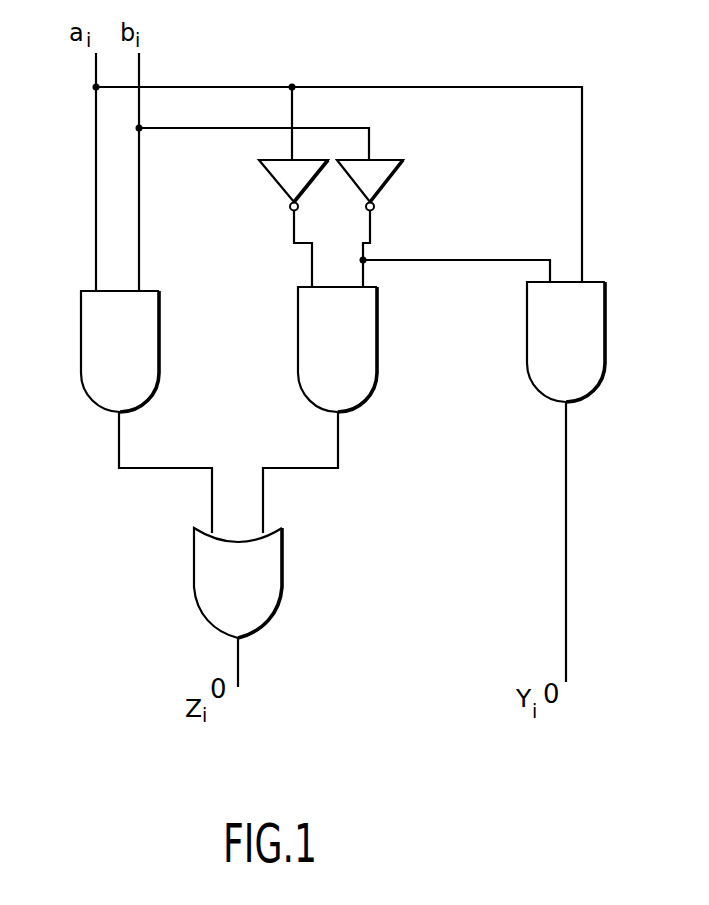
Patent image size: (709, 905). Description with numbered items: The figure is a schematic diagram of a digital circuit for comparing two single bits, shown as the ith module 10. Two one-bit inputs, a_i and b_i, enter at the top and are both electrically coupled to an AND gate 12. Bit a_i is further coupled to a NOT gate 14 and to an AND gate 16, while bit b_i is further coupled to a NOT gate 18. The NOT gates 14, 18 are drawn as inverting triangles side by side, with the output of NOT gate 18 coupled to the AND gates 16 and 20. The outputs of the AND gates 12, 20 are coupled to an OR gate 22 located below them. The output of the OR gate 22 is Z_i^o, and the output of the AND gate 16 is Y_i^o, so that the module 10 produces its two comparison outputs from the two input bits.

The ith module 10 is at (92, 536).
The AND gate 12 is at (160, 362).
The NOT gate 14 is at (280, 187).
The AND gate 16 is at (606, 360).
The NOT gate 18 is at (392, 178).
The AND gate 20 is at (378, 364).
The OR gate 22 is at (283, 590).